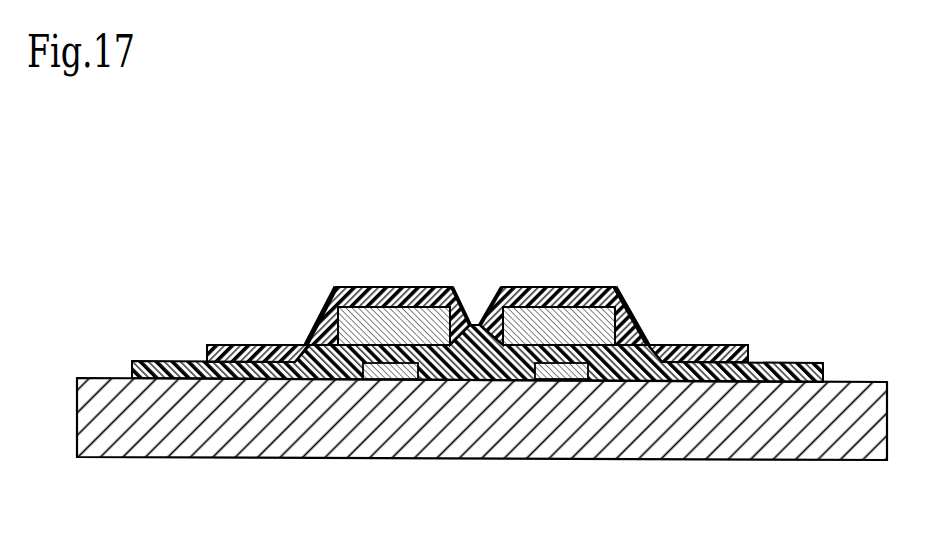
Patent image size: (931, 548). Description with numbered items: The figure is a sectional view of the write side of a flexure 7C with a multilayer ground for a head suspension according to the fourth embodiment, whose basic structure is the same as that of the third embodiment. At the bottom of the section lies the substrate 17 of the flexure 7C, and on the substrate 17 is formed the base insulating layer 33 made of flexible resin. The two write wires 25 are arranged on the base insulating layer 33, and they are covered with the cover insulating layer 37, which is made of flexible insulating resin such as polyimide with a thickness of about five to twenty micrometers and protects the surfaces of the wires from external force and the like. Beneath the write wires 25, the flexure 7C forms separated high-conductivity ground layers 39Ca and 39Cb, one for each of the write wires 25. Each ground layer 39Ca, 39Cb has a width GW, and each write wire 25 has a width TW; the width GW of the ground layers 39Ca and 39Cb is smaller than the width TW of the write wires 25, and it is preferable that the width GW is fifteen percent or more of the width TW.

The flexure 7C is at (700, 265).
The substrate 17 is at (176, 412).
The write wires 25 is at (338, 322).
The base insulating layer 33 is at (787, 363).
The cover insulating layer 37 is at (473, 323).
The ground layer 39Ca is at (377, 370).
The ground layer 39Cb is at (588, 372).
The width of write wire TW is at (452, 287).
The width of ground layer GW is at (416, 363).